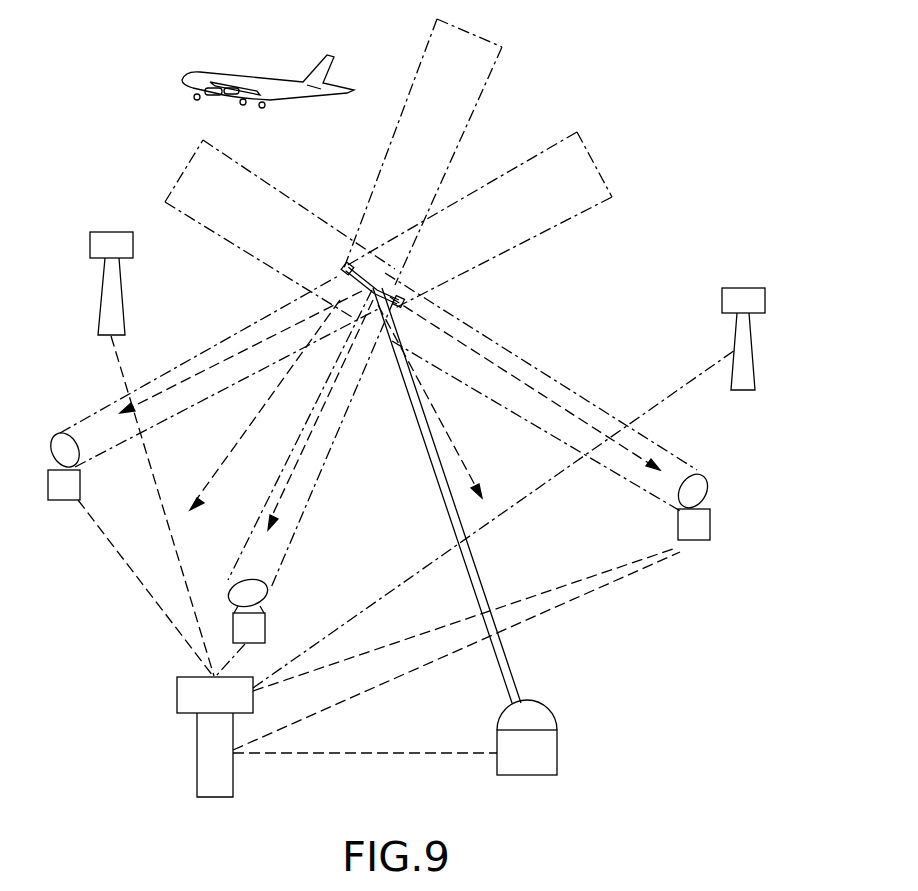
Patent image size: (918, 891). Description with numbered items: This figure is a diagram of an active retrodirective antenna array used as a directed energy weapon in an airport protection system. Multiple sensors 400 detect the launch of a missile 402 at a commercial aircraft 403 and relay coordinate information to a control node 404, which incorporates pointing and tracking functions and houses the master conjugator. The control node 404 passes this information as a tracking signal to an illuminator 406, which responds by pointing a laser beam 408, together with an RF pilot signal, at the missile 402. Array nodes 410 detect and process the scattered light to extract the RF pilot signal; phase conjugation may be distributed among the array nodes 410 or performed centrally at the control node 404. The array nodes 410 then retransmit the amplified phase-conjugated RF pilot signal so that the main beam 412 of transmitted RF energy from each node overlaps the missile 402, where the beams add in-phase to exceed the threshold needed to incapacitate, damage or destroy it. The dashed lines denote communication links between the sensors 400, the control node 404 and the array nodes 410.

The sensors 400 is at (82, 260).
The missile 402 is at (393, 281).
The commercial aircraft 403 is at (211, 60).
The control node 404 is at (173, 724).
The illuminator 406 is at (575, 747).
The laser beam 408 is at (497, 580).
The array nodes 410 is at (38, 499).
The main beam 412 is at (557, 352).